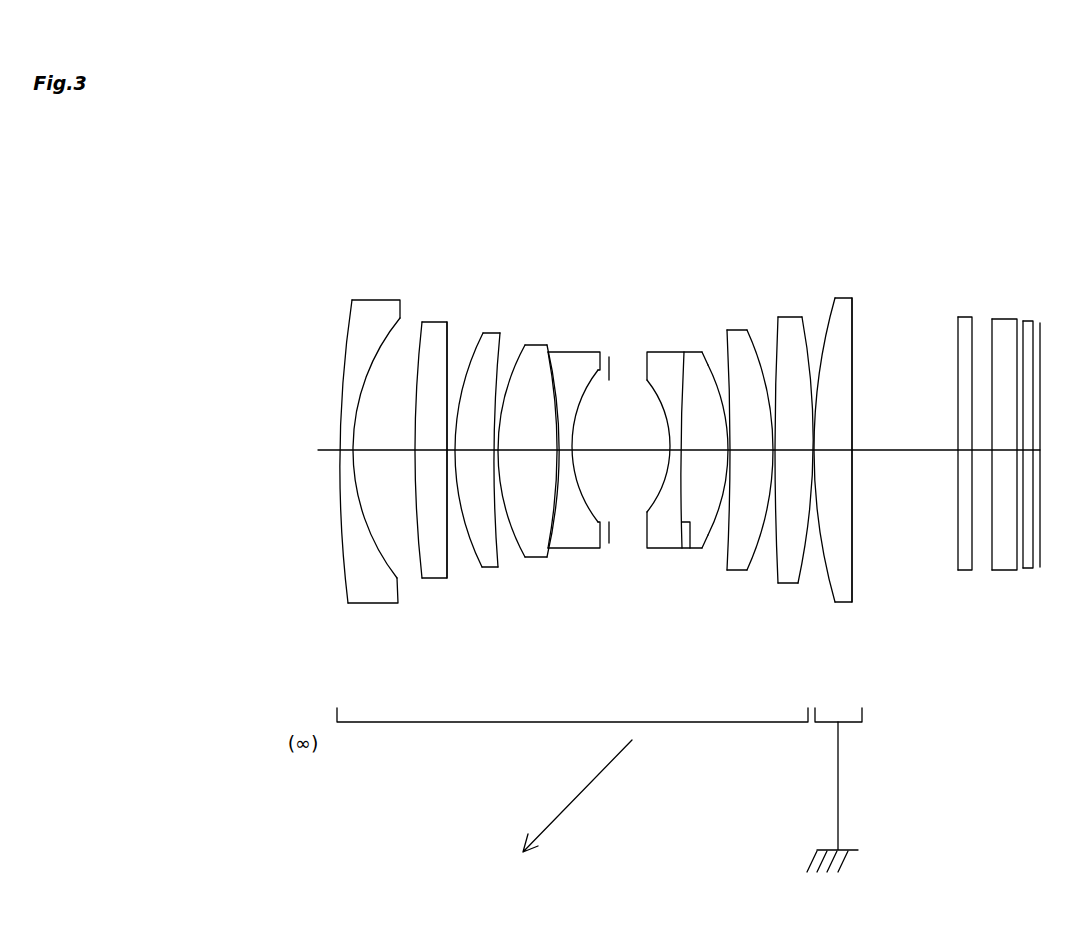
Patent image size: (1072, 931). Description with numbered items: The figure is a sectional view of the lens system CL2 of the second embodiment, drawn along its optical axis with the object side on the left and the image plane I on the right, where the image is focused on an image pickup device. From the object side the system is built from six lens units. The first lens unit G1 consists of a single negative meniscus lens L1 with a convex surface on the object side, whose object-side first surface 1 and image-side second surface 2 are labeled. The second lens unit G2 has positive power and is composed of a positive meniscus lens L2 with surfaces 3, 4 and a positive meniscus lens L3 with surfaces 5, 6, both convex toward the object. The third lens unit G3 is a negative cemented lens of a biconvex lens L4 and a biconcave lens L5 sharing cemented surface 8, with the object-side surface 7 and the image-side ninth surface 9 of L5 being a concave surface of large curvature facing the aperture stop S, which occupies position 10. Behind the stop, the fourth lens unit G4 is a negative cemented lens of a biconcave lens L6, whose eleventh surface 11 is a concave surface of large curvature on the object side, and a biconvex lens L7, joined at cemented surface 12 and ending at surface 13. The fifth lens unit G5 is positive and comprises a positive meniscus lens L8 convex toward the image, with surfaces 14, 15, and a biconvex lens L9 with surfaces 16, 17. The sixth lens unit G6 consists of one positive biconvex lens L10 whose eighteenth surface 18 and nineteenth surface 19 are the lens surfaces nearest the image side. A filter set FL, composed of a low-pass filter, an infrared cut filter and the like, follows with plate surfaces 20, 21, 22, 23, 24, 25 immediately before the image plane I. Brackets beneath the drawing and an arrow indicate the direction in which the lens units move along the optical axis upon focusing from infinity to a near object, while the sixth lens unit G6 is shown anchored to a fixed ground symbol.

The first surface 1 is at (348, 600).
The second surface 2 is at (396, 586).
The third surface 3 is at (423, 578).
The fourth surface 4 is at (447, 578).
The fifth surface 5 is at (481, 567).
The sixth surface 6 is at (498, 567).
The seventh surface 7 is at (525, 557).
The eighth surface 8 is at (555, 557).
The ninth surface 9 is at (590, 548).
The tenth surface 10 is at (609, 543).
The eleventh surface 11 is at (648, 548).
The twelfth surface 12 is at (683, 548).
The thirteenth surface 13 is at (723, 550).
The fourteenth surface 14 is at (729, 570).
The fifteenth surface 15 is at (753, 570).
The sixteenth surface 16 is at (779, 583).
The seventeenth surface 17 is at (798, 583).
The eighteenth surface 18 is at (836, 602).
The nineteenth surface 19 is at (850, 602).
The twentieth surface 20 is at (958, 570).
The twenty-first surface 21 is at (971, 570).
The twenty-second surface 22 is at (993, 570).
The twenty-third surface 23 is at (1016, 570).
The twenty-fourth surface 24 is at (1025, 568).
The twenty-fifth surface 25 is at (1036, 567).
The negative meniscus lens L1 is at (378, 298).
The positive meniscus lens L2 is at (432, 322).
The positive meniscus lens L3 is at (493, 333).
The biconvex lens L4 is at (535, 345).
The biconcave lens L5 is at (573, 352).
The biconcave lens L6 is at (665, 352).
The biconvex lens L7 is at (706, 352).
The positive meniscus lens L8 is at (738, 330).
The biconvex lens L9 is at (792, 317).
The biconvex lens L10 is at (838, 298).
The first lens unit G1 is at (335, 193).
The second lens unit G2 is at (415, 193).
The third lens unit G3 is at (500, 193).
The fourth lens unit G4 is at (643, 193).
The fifth lens unit G5 is at (735, 193).
The sixth lens unit G6 is at (865, 193).
The aperture stop S is at (609, 357).
The filter set FL is at (1035, 193).
The image plane I is at (1040, 323).
The lens system CL2 is at (890, 110).